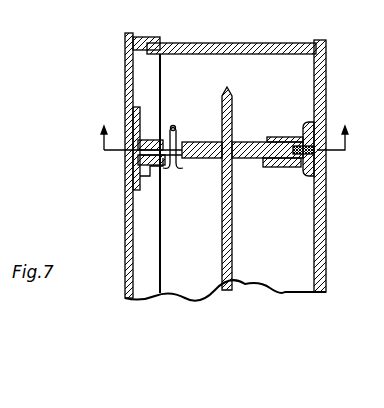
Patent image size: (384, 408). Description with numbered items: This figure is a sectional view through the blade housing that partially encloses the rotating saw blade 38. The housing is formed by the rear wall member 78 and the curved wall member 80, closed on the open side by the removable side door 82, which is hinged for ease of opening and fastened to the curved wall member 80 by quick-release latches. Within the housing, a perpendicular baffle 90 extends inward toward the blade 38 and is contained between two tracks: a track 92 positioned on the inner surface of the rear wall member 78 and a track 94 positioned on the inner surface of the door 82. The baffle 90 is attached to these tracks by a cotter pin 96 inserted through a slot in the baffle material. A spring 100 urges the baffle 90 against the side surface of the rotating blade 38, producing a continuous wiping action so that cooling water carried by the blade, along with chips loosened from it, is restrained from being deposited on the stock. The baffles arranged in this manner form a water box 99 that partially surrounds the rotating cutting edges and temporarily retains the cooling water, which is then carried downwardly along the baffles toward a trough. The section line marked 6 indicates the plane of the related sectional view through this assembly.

The section line 6- 6 is at (226, 129).
The blade 38 is at (233, 100).
The rear wall member 78 is at (327, 214).
The curved wall member 80 is at (245, 45).
The removable side door 82 is at (126, 194).
The perpendicular baffle 90 is at (195, 140).
The track 92 is at (145, 122).
The track 94 is at (147, 182).
The cotter pin 96 is at (174, 125).
The water box 99 is at (242, 277).
The spring 100 is at (305, 157).